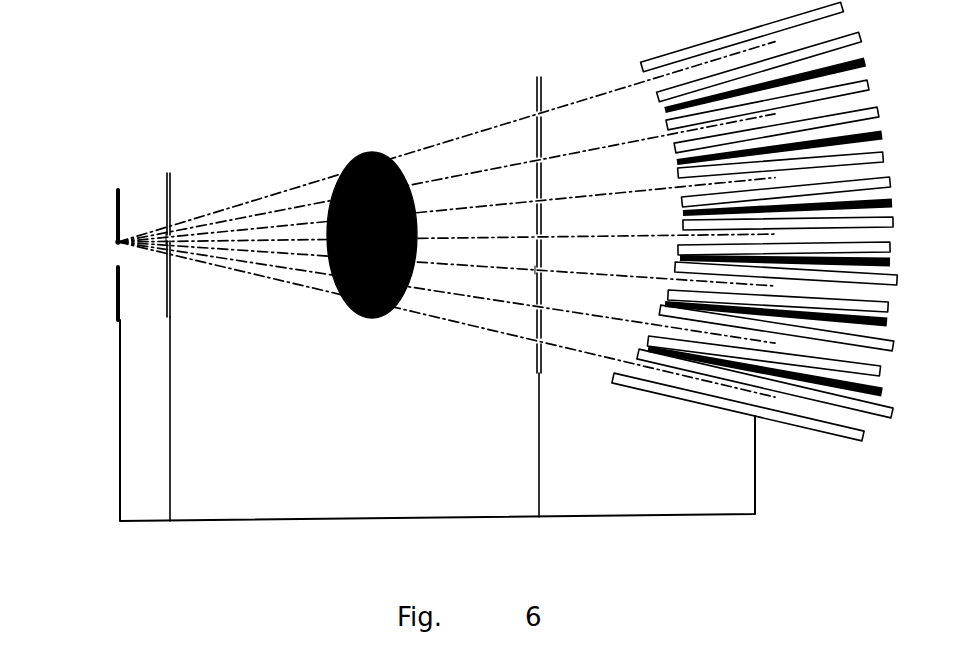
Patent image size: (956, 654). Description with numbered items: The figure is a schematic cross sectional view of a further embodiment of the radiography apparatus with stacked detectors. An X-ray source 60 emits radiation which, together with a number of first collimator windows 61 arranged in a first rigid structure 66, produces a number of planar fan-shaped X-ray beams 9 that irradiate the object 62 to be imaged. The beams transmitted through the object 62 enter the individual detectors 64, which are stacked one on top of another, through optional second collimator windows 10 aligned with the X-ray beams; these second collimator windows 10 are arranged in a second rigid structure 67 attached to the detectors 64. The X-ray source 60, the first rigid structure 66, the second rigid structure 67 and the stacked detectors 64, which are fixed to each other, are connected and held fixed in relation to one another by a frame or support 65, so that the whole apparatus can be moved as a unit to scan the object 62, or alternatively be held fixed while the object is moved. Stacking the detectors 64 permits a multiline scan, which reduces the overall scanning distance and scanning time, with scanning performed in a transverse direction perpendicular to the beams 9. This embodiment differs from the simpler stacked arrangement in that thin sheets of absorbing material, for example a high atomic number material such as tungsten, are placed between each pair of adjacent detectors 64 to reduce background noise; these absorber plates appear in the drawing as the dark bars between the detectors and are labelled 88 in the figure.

The planar fan-shaped X-ray beams 9 is at (410, 153).
The second collimator windows 10 is at (538, 273).
The X-ray source 60 is at (116, 246).
The first collimator windows 61 is at (169, 233).
The object 62 is at (345, 310).
The detectors 64 is at (754, 220).
The frame or support 65 is at (293, 522).
The first rigid structure 66 is at (168, 175).
The second rigid structure 67 is at (543, 90).
The detector element 88 is at (677, 163).